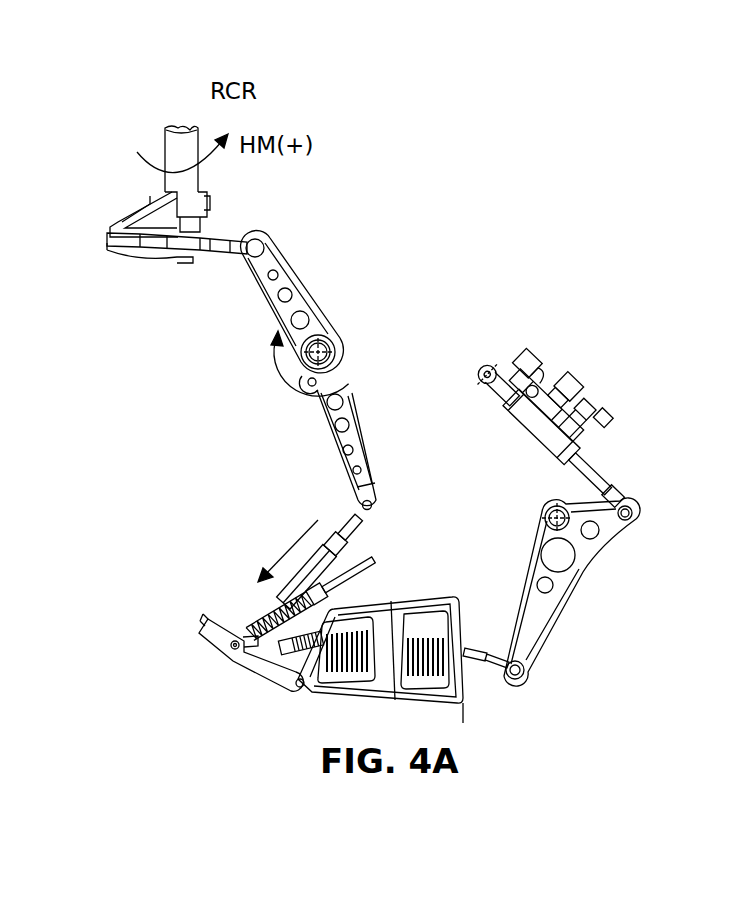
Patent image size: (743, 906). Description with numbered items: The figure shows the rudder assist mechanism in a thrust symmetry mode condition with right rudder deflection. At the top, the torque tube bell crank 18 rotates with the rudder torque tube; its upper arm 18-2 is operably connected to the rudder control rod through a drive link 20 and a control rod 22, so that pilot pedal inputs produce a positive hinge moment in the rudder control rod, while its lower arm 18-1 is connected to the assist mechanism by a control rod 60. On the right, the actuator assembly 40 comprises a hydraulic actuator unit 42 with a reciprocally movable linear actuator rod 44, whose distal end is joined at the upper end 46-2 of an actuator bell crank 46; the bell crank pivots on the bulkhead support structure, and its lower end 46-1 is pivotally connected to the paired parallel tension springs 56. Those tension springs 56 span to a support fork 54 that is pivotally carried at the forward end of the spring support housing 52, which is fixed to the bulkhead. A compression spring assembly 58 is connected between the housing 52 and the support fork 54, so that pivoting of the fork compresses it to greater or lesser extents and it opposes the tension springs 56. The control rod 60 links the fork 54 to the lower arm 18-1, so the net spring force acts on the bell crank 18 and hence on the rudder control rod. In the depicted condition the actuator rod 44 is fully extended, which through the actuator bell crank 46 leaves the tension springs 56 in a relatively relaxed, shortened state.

The torque tube bell crank 18 is at (313, 370).
The lower arm of the bell crank 18-1 is at (331, 412).
The upper arm of the bell crank 18-2 is at (277, 273).
The drive link 20 is at (146, 257).
The control rod 22 is at (218, 242).
The actuator assembly 40 is at (557, 412).
The hydraulic actuator unit 42 is at (530, 417).
The actuator rod 44 is at (593, 475).
The actuator bell crank 46 is at (606, 592).
The lower end of the actuator bell crank 46-1 is at (532, 650).
The upper end of the actuator bell crank 46-2 is at (663, 529).
The spring support housing 52 is at (450, 690).
The support fork 54 is at (258, 667).
The tension springs 56 is at (422, 648).
The compression spring assembly 58 is at (262, 615).
The control rod 60 is at (327, 550).